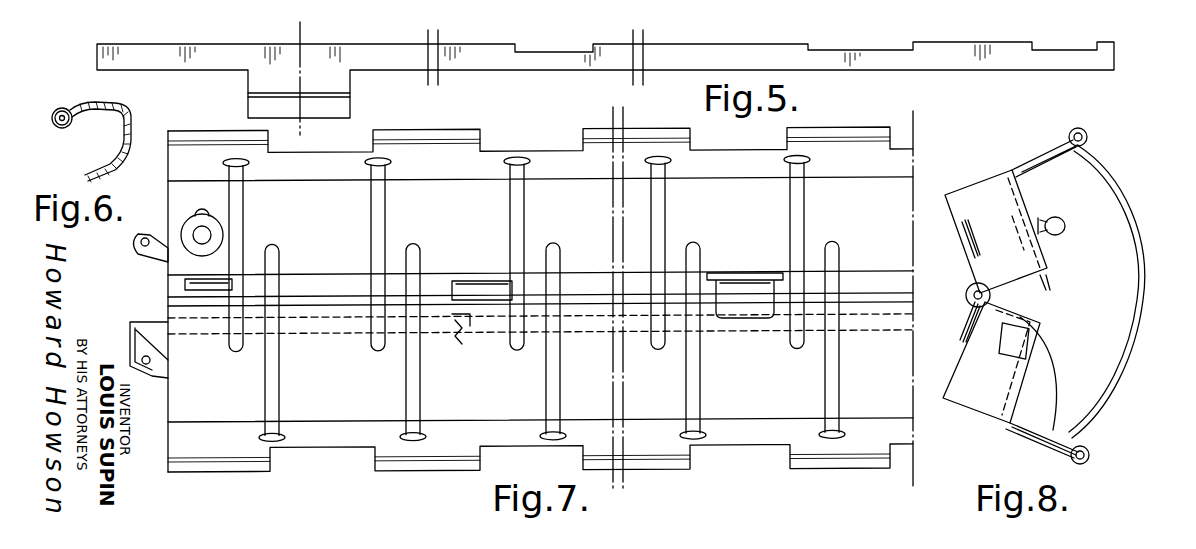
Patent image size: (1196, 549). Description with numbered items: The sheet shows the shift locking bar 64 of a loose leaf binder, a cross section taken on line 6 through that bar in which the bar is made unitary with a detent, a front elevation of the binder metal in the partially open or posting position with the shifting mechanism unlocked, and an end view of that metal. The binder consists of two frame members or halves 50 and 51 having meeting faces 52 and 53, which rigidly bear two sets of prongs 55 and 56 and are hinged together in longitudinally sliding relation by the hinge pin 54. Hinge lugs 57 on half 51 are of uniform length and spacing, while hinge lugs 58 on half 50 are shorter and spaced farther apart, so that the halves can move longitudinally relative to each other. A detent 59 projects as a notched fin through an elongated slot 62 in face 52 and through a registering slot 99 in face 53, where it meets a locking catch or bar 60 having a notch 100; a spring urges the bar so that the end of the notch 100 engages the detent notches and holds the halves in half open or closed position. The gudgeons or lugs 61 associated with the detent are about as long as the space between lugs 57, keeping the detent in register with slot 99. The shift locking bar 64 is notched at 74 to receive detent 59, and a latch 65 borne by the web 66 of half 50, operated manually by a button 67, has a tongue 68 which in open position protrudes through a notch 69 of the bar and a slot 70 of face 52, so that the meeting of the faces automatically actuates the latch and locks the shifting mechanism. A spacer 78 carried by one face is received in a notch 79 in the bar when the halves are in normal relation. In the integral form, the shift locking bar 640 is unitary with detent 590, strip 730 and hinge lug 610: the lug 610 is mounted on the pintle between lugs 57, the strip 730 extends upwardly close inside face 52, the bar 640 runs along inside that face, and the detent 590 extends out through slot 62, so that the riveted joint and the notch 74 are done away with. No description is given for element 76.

In FIG. 5, the section line 6— 6 is at (299, 73).
In FIG. 7, the frame member or half 50 is at (902, 196).
In FIG. 8, the frame member or half 50 is at (985, 192).
In FIG. 7, the frame member or half 51 is at (910, 378).
In FIG. 8, the frame member or half 51 is at (982, 405).
In FIG. 7, the meeting face 52 is at (178, 286).
In FIG. 8, the meeting face 52 is at (1035, 272).
In FIG. 7, the meeting face 53 is at (178, 316).
In FIG. 8, the meeting face 53 is at (1022, 305).
In FIG. 7, the hinge pin 54 is at (567, 300).
In FIG. 8, the hinge pin 54 is at (968, 302).
In FIG. 7, the prongs 55 is at (383, 232).
In FIG. 8, the prongs 55 is at (1102, 196).
In FIG. 7, the prongs 56 is at (416, 256).
In FIG. 8, the prongs 56 is at (1124, 366).
In FIG. 7, the hinge lugs 57 is at (315, 300).
In FIG. 7, the hinge lugs 58 is at (595, 298).
In FIG. 7, the detent 59 is at (400, 345).
In FIG. 8, the detent 59 is at (1045, 316).
In FIG. 7, the locking catch or bar 60 is at (133, 368).
In FIG. 8, the locking catch or bar 60 is at (1010, 348).
In FIG. 7, the gudgeons or lugs 61 is at (463, 297).
In FIG. 7, the elongated slot 62 is at (490, 282).
In FIG. 5, the shift locking bar 64 is at (1000, 55).
In FIG. 8, the shift locking bar 64 is at (1035, 265).
In FIG. 8, the latch 65 is at (1020, 224).
In FIG. 7, the web 66 is at (188, 190).
In FIG. 8, the web 66 is at (1022, 186).
In FIG. 7, the button 67 is at (208, 235).
In FIG. 8, the button 67 is at (1063, 226).
In FIG. 7, the tongue 68 is at (214, 286).
In FIG. 8, the tongue 68 is at (1050, 284).
In FIG. 5, the notch 69 is at (1048, 48).
In FIG. 7, the slot 70 is at (192, 273).
In FIG. 5, the notch 74 is at (815, 46).
In FIG. 5, the end tab 76 is at (1107, 40).
In FIG. 7, the spacer 78 is at (741, 296).
In FIG. 5, the notch 79 is at (538, 46).
In FIG. 7, the registering slot 99 is at (475, 330).
In FIG. 7, the notch 100 is at (462, 345).
In FIG. 6, the detent 590 is at (118, 150).
In FIG. 5, the hinge lug 610 is at (265, 5).
In FIG. 6, the hinge lug 610 is at (56, 110).
In FIG. 5, the shift locking bar 640 is at (360, 58).
In FIG. 6, the shift locking bar 640 is at (120, 108).
In FIG. 5, the strip 730 is at (262, 82).
In FIG. 6, the strip 730 is at (96, 100).